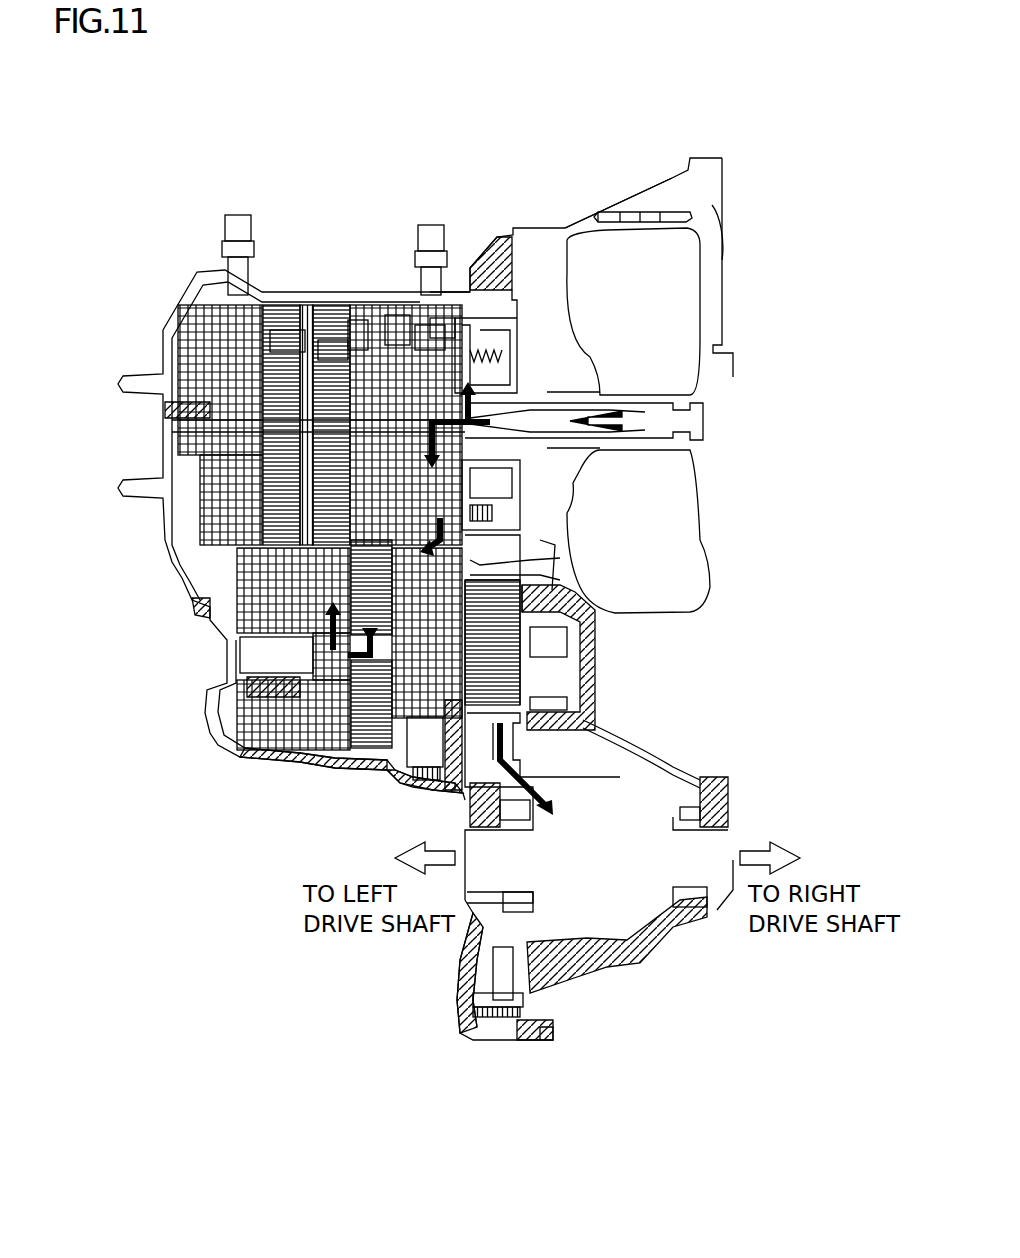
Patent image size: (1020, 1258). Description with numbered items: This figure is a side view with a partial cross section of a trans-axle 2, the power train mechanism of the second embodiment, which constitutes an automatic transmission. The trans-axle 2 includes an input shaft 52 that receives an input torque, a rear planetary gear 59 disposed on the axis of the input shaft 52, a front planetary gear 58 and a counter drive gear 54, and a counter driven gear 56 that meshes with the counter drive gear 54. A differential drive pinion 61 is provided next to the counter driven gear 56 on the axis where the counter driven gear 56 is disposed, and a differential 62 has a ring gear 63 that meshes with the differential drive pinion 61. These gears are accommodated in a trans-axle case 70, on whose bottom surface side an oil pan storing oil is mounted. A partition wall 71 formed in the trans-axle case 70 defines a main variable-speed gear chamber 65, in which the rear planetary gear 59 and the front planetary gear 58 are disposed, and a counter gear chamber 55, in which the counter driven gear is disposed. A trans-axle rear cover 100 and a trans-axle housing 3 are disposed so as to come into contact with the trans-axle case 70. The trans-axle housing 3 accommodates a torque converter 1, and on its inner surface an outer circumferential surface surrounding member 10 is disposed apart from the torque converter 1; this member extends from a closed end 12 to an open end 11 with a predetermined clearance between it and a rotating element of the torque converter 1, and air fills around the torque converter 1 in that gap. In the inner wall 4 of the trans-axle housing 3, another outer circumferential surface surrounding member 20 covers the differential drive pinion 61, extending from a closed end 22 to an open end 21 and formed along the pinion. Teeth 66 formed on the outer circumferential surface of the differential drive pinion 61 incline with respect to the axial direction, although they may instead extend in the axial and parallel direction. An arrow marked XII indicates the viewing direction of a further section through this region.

The torque converter 1 is at (722, 276).
The trans-axle 2 is at (733, 118).
The trans-axle housing 3 is at (652, 185).
The inner wall 4 is at (620, 640).
The outer circumferential surface surrounding member 10 is at (626, 210).
The open end 11 is at (718, 210).
The closed end 12 is at (599, 196).
The outer circumferential surface surrounding member 20 is at (600, 618).
The open end 21 is at (530, 560).
The closed end 22 is at (484, 574).
The input shaft 52 is at (658, 430).
The counter drive gear 54 is at (432, 348).
The counter gear chamber 55 is at (402, 328).
The counter driven gear 56 is at (420, 755).
The front planetary gear 58 is at (318, 332).
The rear planetary gear 59 is at (265, 430).
The differential drive pinion 61 is at (590, 652).
The differential 62 is at (620, 908).
The ring gear 63 is at (506, 1000).
The main variable-speed gear chamber 65 is at (336, 345).
The teeth 66 is at (528, 674).
The trans-axle case 70 is at (437, 330).
The partition wall 71 is at (357, 332).
The trans-axle rear cover 100 is at (182, 306).
The section line XII is at (785, 594).